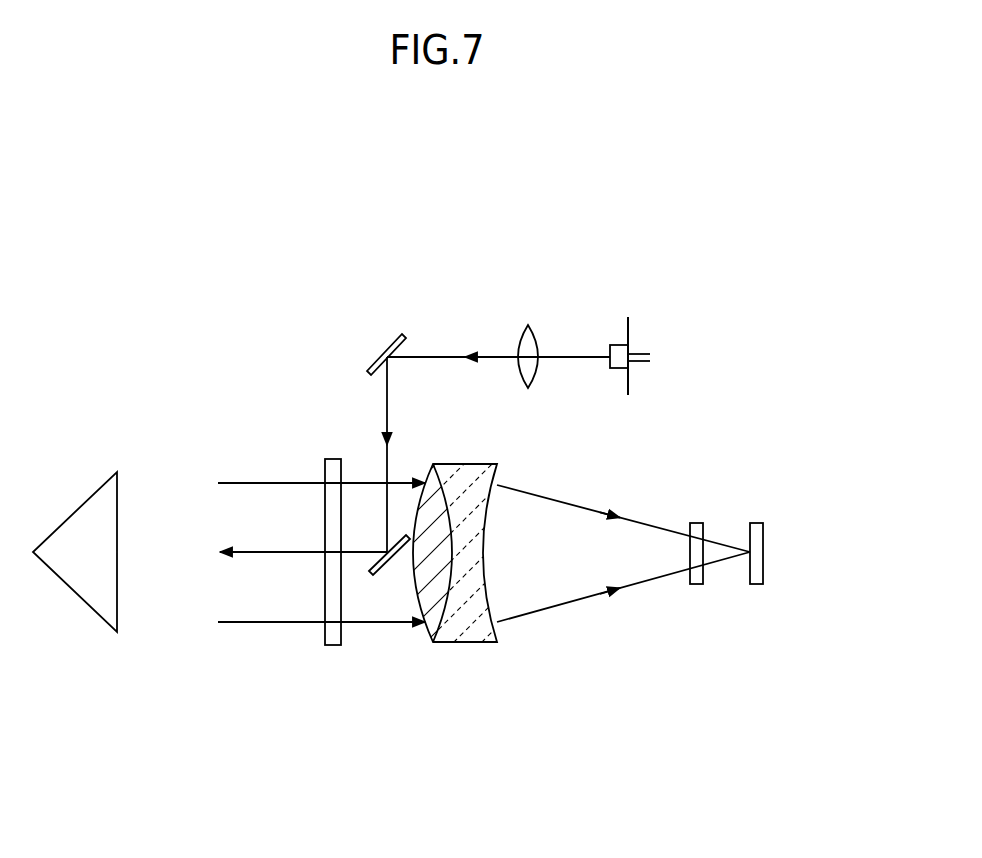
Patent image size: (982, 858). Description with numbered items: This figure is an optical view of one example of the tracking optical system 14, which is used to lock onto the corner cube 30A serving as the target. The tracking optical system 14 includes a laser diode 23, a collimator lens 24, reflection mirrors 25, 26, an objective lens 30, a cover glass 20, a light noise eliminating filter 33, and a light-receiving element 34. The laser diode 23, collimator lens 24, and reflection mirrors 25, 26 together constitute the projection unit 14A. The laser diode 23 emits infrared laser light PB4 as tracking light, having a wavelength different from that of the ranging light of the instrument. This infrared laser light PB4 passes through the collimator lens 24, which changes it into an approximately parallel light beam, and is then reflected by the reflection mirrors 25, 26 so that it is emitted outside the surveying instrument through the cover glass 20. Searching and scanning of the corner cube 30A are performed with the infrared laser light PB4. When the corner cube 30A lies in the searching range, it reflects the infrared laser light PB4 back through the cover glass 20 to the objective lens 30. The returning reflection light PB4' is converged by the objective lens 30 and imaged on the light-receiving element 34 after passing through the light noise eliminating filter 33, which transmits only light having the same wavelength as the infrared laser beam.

The tracking optical system 14 is at (555, 276).
The projection unit 14A is at (564, 377).
The cover glass 20 is at (332, 652).
The laser diode 23 is at (633, 333).
The collimator lens 24 is at (529, 326).
The reflection mirror 25 is at (372, 352).
The reflection mirror 26 is at (388, 573).
The objective lens 30 is at (460, 652).
The corner cube 30A is at (88, 610).
The light noise eliminating filter 33 is at (700, 588).
The light-receiving element 34 is at (760, 588).
The infrared laser light PB4 is at (321, 552).
The reflection light PB4' is at (623, 576).